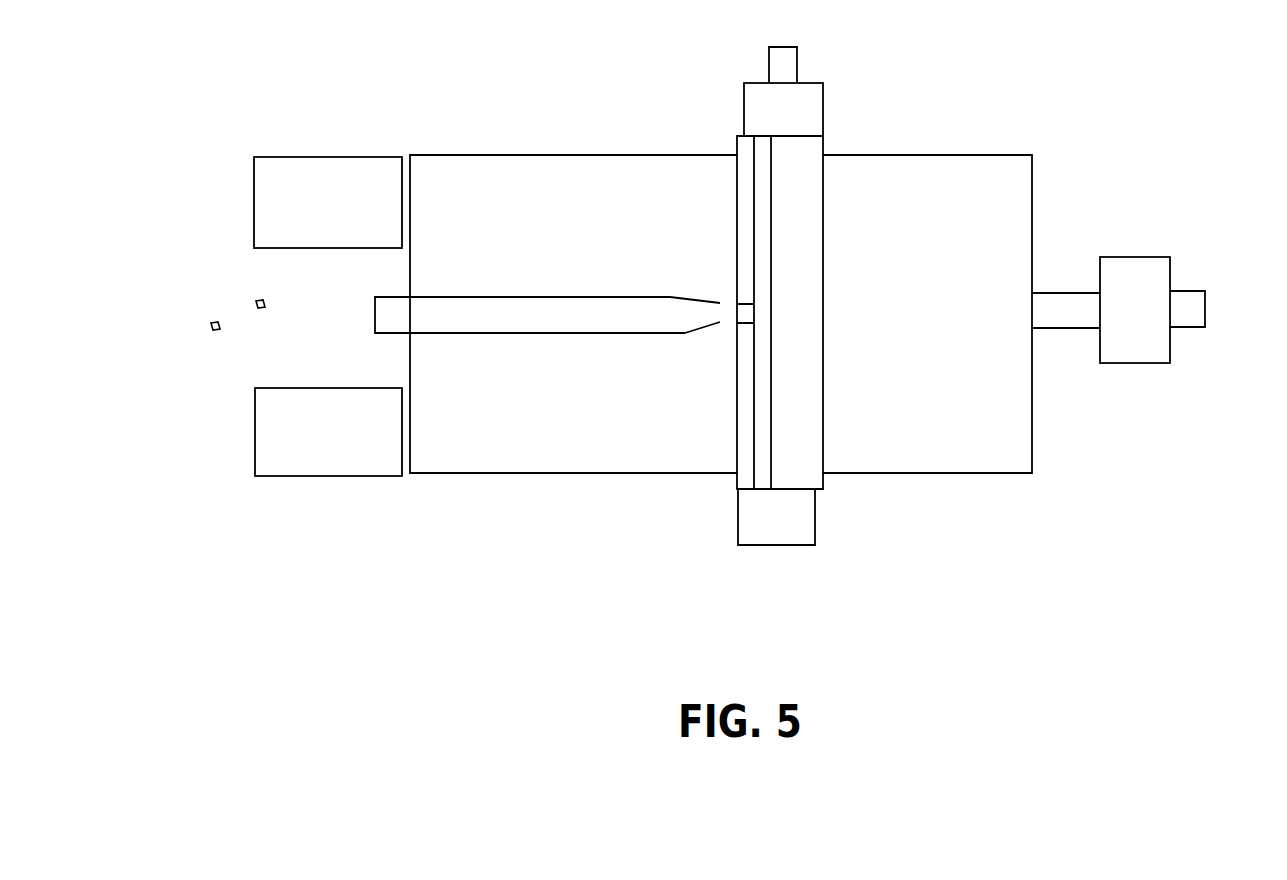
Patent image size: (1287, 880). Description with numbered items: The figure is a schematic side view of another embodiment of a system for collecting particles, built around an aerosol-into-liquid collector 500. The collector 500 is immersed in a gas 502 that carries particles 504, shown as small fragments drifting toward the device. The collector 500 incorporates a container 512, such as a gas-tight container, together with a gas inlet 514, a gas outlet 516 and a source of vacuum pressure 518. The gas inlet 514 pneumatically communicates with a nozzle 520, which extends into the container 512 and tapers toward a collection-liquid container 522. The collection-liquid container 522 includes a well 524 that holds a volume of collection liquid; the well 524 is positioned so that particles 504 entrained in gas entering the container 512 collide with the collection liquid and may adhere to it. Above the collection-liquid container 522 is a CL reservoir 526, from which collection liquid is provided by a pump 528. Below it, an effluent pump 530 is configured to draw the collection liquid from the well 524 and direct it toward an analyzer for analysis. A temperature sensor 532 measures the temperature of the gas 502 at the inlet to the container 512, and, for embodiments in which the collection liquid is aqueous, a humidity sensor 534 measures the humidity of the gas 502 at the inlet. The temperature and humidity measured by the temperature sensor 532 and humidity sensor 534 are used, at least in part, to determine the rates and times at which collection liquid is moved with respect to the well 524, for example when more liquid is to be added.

The aerosol-into-liquid collector 500 is at (1068, 118).
The gas 502 is at (290, 117).
The particles 504 is at (204, 286).
The container 512 is at (565, 154).
The gas inlet 514 is at (393, 334).
The gas outlet 516 is at (1207, 308).
The source of vacuum pressure 518 is at (1118, 257).
The nozzle 520 is at (703, 299).
The collection-liquid container 522 is at (823, 241).
The well 524 is at (729, 321).
The CL reservoir 526 is at (825, 118).
The pump 528 is at (784, 47).
The effluent pump 530 is at (780, 546).
The temperature sensor 532 is at (348, 470).
The humidity sensor 534 is at (347, 242).